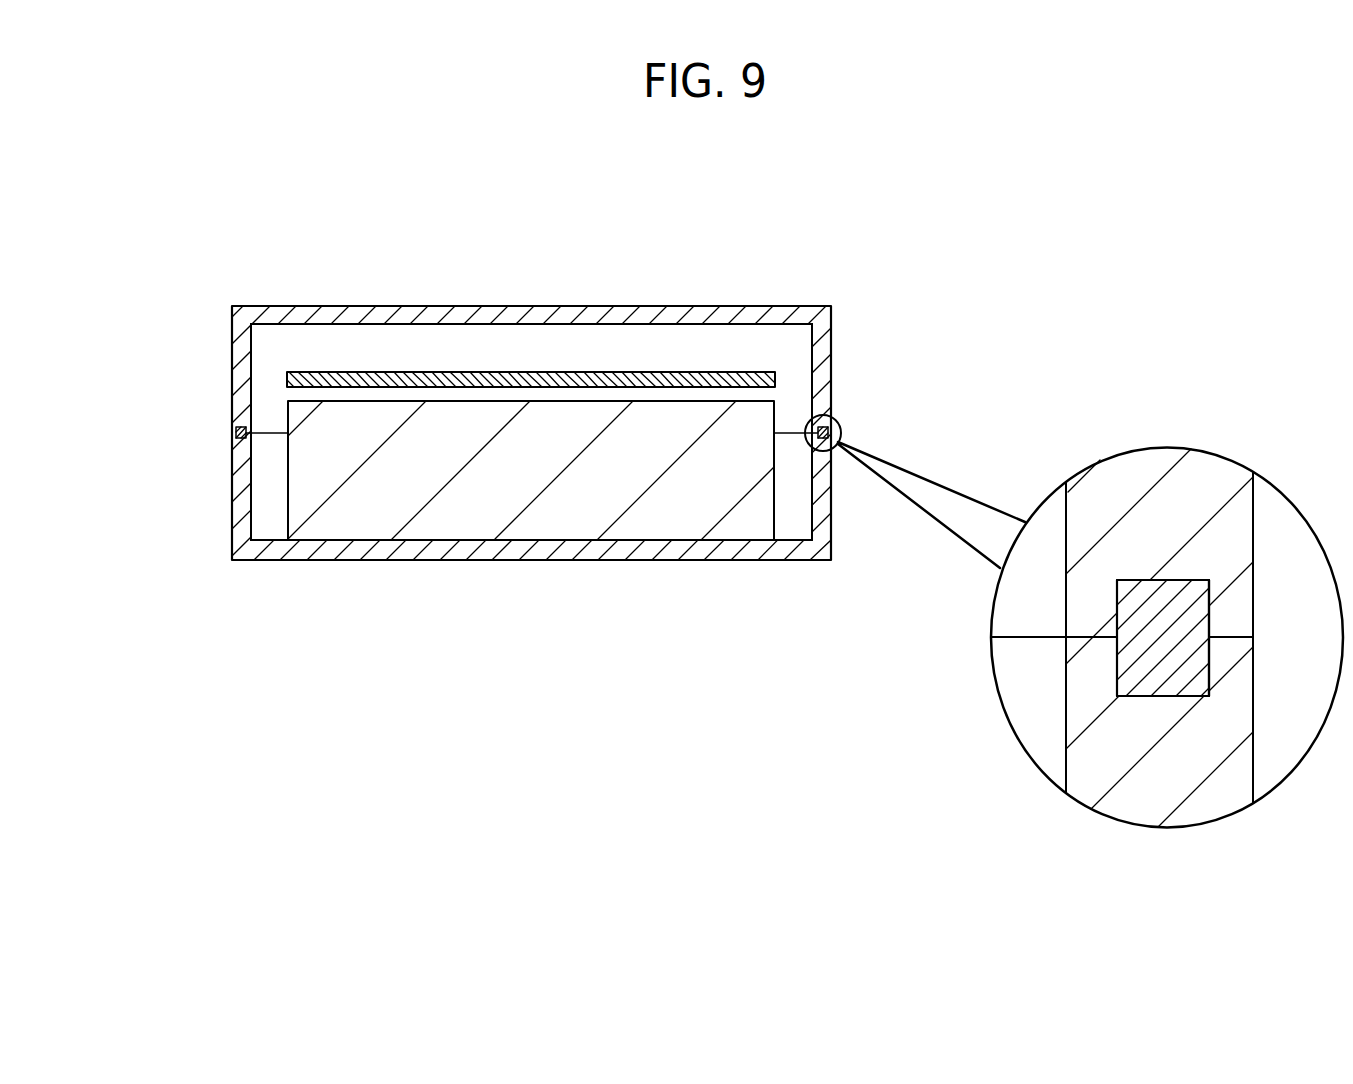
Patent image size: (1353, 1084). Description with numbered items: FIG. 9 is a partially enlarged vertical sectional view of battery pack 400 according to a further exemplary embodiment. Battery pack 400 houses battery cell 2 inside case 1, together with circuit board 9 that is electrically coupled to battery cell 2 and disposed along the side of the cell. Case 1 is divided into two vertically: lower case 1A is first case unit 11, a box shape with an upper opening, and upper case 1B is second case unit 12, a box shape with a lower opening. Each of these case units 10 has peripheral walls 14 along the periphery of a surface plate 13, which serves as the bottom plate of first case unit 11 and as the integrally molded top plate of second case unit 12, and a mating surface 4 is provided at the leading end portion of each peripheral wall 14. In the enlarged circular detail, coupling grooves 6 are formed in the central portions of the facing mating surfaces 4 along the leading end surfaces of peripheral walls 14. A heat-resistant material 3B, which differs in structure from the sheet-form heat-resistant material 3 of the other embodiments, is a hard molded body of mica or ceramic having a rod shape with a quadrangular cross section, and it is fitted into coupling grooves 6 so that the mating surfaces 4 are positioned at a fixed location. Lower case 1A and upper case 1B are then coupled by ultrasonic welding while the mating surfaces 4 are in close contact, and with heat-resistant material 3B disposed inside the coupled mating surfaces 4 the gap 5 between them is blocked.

The battery pack 400 is at (878, 212).
The case 1 is at (102, 335).
The lower case 1A is at (185, 505).
The upper case 1B is at (185, 361).
The battery cell 2 is at (528, 491).
The heat-resistant material 3 is at (532, 432).
The heat-resistant material 3B is at (1140, 650).
The mating surface 4 is at (1090, 616).
The gap 5 is at (1229, 613).
The coupling groove 6 is at (1173, 565).
The circuit board 9 is at (552, 378).
The case unit 10 is at (531, 433).
The first case unit 11 is at (697, 646).
The second case unit 12 is at (840, 221).
The surface plate 13 is at (470, 313).
The peripheral wall 14 is at (237, 352).